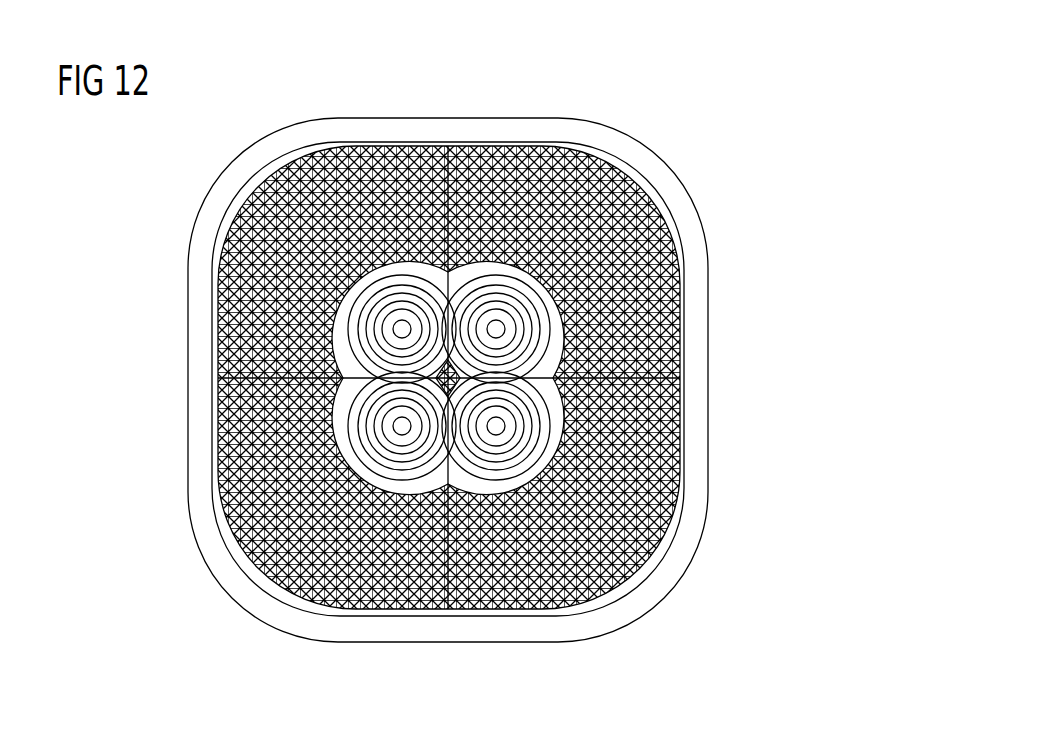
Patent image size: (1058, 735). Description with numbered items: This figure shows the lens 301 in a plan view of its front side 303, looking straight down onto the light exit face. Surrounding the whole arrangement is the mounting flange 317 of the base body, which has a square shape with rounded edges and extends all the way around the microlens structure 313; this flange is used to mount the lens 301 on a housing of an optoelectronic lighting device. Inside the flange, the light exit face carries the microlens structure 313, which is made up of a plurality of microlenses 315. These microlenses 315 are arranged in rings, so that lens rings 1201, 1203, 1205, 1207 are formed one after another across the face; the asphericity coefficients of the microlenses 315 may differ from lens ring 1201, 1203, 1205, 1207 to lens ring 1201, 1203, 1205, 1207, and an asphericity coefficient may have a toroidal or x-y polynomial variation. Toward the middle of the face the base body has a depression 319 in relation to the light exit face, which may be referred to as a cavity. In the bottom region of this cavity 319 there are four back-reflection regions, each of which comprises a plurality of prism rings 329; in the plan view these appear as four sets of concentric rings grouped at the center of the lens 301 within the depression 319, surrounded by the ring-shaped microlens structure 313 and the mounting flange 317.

The lens 301 is at (698, 153).
The front side 303 is at (660, 222).
The microlens structure 313 is at (675, 278).
The microlenses 315 is at (682, 358).
The mounting flange 317 is at (697, 328).
The depression 319 is at (667, 457).
The prism rings 329 is at (413, 318).
The lens ring 1201 is at (250, 532).
The lens ring 1203 is at (262, 548).
The lens ring 1205 is at (310, 590).
The lens ring 1207 is at (363, 610).